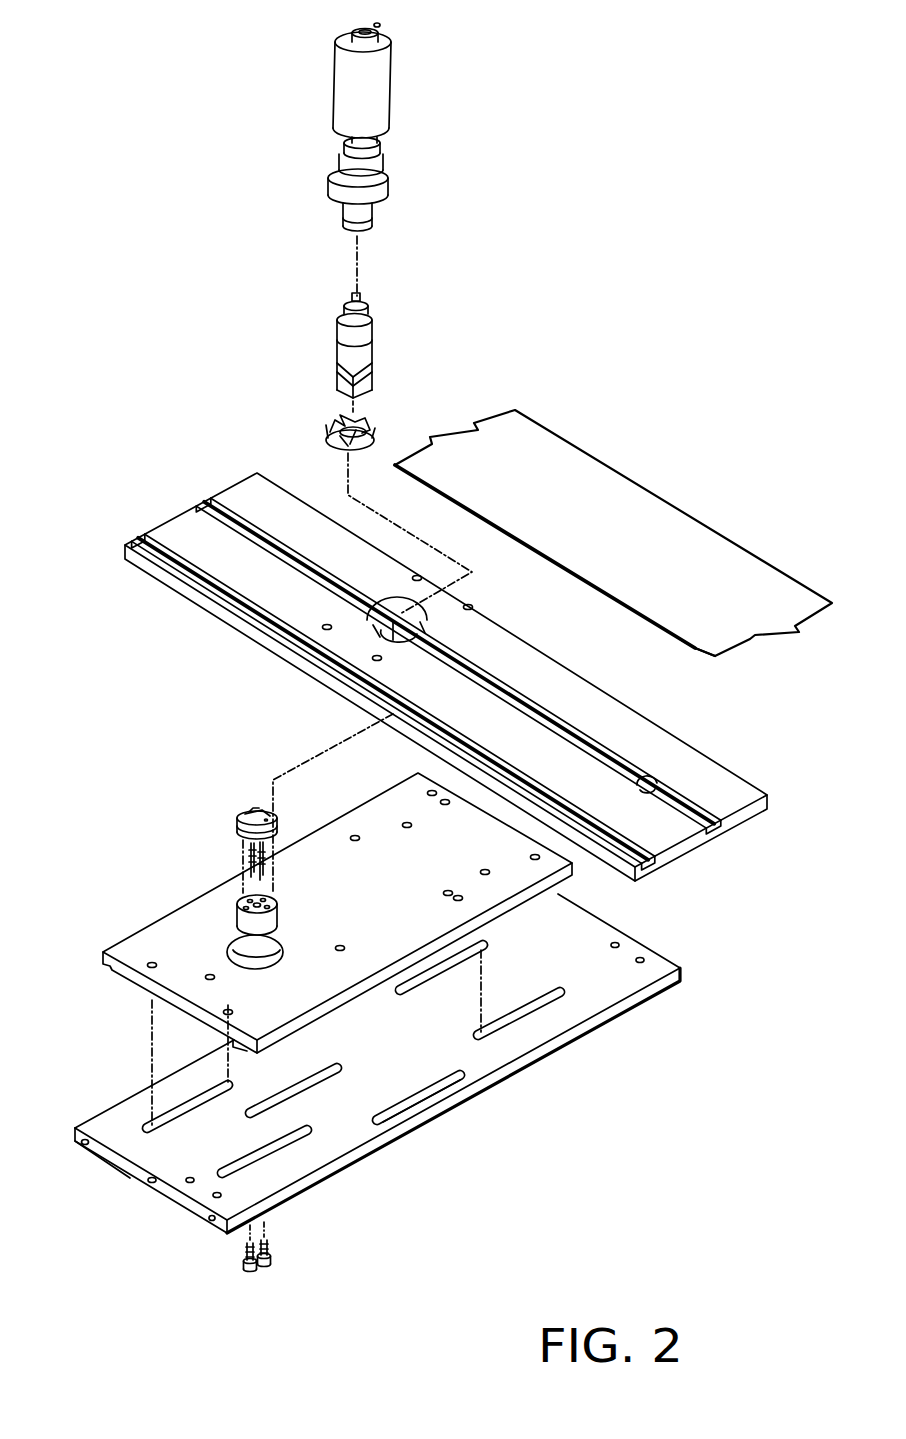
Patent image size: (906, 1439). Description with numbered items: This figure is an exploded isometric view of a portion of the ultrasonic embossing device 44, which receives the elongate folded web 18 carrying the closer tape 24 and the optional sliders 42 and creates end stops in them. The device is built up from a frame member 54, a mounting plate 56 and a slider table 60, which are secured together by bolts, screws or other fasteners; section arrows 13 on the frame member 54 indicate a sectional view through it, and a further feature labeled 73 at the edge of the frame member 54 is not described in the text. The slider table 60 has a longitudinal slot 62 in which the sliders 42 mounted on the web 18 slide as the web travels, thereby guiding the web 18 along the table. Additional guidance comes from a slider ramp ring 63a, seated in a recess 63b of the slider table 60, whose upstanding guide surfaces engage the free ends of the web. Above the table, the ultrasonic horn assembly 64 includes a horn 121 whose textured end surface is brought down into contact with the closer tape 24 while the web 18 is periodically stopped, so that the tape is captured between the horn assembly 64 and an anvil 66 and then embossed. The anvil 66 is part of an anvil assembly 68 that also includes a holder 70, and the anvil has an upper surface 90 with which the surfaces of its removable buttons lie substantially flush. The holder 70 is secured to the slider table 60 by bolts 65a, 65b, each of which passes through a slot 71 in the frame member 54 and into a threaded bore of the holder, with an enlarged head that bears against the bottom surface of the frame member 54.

The section line 13- 13 is at (355, 1058).
The web 18 is at (637, 500).
The closer tape 24 is at (650, 625).
The slider closure member 42 is at (693, 647).
The ultrasonic embossing device 44 is at (682, 908).
The frame member 54 is at (113, 1117).
The mounting plate 56 is at (122, 948).
The slider table 60 is at (718, 805).
The longitudinal slot 62 is at (643, 773).
The slider ramp ring 63a is at (375, 432).
The recess 63b is at (430, 612).
The ultrasonic horn assembly 64 is at (385, 94).
The bolt 65a is at (245, 1263).
The bolt 65b is at (268, 1263).
The anvil 66 is at (250, 815).
The anvil assembly 68 is at (195, 856).
The holder 70 is at (245, 923).
The slot 71 is at (337, 1063).
The edge of base plate 73 is at (113, 1162).
The upper surface 90 is at (257, 810).
The horn 121 is at (368, 380).